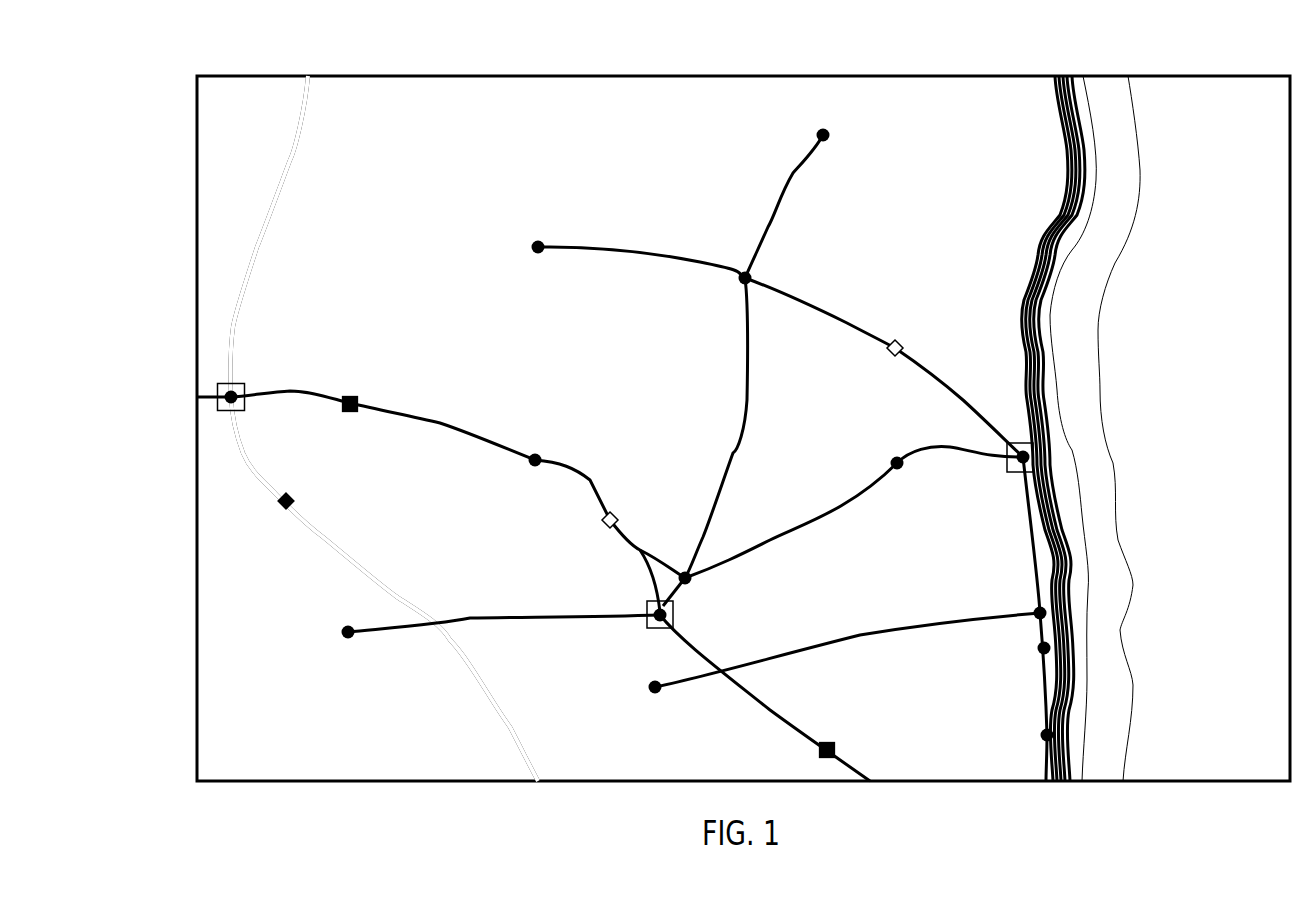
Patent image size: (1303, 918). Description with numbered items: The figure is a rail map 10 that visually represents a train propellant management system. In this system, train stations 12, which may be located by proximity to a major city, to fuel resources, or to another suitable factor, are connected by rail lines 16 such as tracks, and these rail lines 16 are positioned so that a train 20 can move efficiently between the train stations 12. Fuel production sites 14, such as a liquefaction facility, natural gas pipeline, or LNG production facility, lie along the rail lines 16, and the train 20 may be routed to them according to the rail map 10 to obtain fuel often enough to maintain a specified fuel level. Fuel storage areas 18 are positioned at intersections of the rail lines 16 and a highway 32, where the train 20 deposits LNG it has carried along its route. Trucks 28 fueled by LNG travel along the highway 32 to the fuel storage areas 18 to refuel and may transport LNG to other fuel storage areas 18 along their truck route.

The rail map 10 is at (231, 54).
The train station 12 is at (815, 132).
The fuel production site 14 is at (350, 413).
The rail line 16 is at (745, 382).
The fuel storage area 18 is at (225, 383).
The train 20 is at (898, 340).
The truck 28 is at (282, 506).
The highway 32 is at (394, 580).